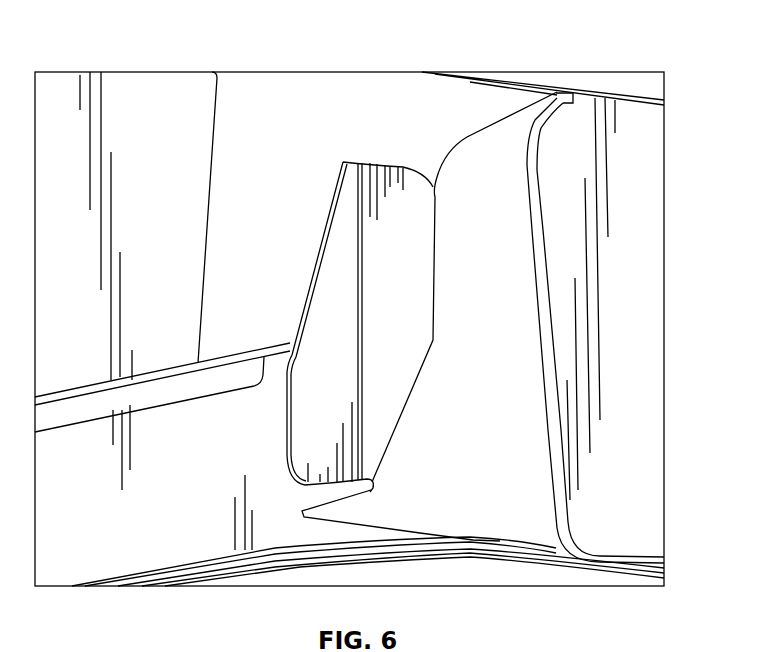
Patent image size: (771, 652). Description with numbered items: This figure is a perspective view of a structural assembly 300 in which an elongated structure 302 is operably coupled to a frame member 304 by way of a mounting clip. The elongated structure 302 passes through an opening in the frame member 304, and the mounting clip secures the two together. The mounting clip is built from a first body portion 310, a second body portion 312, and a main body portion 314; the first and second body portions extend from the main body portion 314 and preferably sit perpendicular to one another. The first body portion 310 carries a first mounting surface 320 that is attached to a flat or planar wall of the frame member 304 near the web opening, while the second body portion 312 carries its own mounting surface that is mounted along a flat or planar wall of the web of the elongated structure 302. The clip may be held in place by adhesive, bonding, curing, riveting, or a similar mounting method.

The structural assembly 300 is at (642, 52).
The elongated structure 302 is at (403, 182).
The frame member 304 is at (648, 138).
The first body portion 310 is at (405, 230).
The second body portion 312 is at (307, 483).
The main body portion 314 is at (342, 490).
The first mounting surface 320 is at (557, 90).